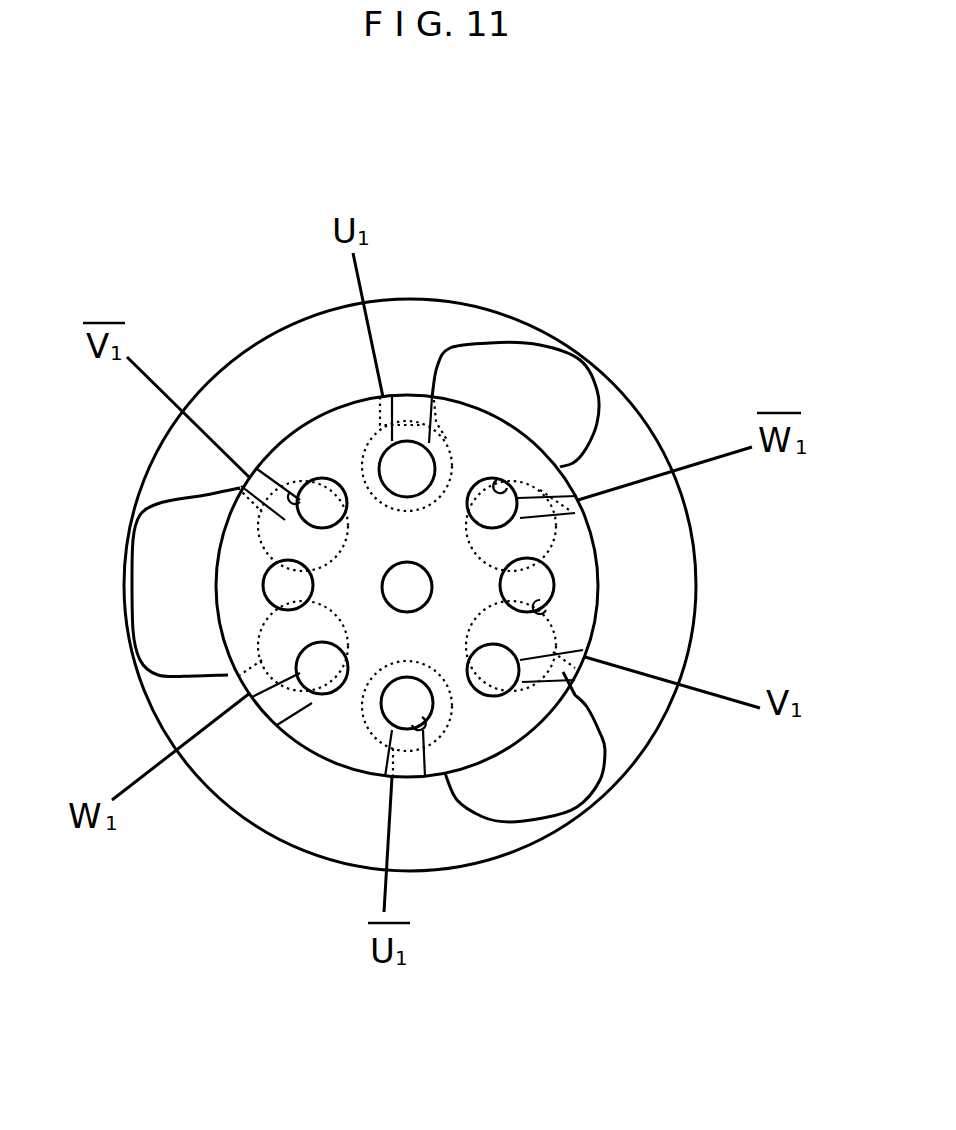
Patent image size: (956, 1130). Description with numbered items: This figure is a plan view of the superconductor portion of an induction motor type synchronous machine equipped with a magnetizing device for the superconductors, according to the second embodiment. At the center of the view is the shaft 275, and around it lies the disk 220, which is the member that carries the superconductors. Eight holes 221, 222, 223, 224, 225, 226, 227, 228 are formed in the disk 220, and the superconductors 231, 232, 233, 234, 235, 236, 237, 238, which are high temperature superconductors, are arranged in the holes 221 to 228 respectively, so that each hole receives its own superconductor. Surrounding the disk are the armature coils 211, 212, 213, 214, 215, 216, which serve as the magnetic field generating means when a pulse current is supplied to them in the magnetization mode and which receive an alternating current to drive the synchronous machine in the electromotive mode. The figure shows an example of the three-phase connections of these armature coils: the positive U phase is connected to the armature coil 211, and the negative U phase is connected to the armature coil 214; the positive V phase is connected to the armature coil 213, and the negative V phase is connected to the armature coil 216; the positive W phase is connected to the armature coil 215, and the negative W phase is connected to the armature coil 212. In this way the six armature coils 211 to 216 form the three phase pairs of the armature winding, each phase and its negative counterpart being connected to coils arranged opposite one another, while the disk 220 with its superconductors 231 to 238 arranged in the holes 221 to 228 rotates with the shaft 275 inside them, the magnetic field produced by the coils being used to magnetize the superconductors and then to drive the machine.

The armature coil 211 is at (450, 449).
The armature coil 212 is at (562, 526).
The armature coil 213 is at (551, 659).
The armature coil 214 is at (363, 725).
The armature coil 215 is at (251, 646).
The armature coil 216 is at (253, 500).
The disk 220 is at (353, 397).
The hole 221 is at (396, 440).
The hole 222 is at (512, 500).
The hole 223 is at (546, 602).
The hole 224 is at (488, 697).
The hole 225 is at (384, 740).
The hole 226 is at (260, 692).
The hole 227 is at (268, 565).
The hole 228 is at (328, 480).
The superconductor 231 is at (433, 396).
The superconductor 232 is at (497, 478).
The superconductor 233 is at (537, 563).
The superconductor 234 is at (533, 668).
The superconductor 235 is at (426, 738).
The superconductor 236 is at (277, 724).
The superconductor 237 is at (273, 593).
The superconductor 238 is at (290, 494).
The shaft 275 is at (410, 562).